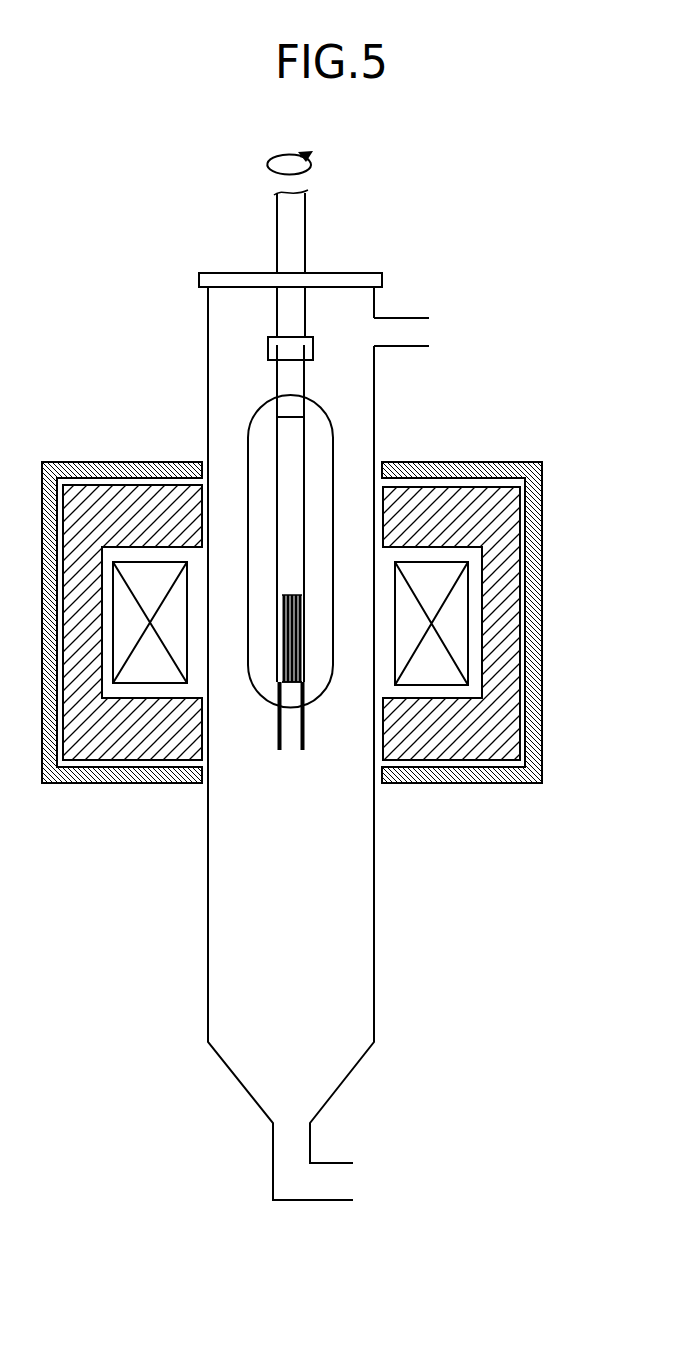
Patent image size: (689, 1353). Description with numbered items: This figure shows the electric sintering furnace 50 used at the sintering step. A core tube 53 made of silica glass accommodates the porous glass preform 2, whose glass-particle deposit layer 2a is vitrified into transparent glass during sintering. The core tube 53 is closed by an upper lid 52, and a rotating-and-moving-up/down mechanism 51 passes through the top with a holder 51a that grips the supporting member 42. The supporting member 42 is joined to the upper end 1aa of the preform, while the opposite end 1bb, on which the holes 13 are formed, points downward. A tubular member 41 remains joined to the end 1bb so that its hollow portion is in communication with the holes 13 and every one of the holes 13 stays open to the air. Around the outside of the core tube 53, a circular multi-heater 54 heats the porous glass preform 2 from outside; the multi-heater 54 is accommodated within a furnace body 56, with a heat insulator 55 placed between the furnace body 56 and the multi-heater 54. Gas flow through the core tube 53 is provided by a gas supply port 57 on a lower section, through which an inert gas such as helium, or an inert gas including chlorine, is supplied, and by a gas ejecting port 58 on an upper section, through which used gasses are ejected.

The sintering furnace 50 is at (526, 172).
The rotating-and-moving-up/down mechanism 51 is at (304, 223).
The upper lid 52 is at (355, 274).
The gas ejecting port 58 is at (429, 333).
The holder 51a is at (268, 345).
The supporting member 42 is at (305, 378).
The other end of the glass preform 1aa is at (291, 412).
The porous glass preform 2 is at (334, 448).
The glass-particle deposit layer 2a is at (260, 433).
The holes 13 is at (300, 655).
The tubular member 41 is at (304, 733).
The end of the glass preform 1bb is at (296, 684).
The core tube 53 is at (375, 888).
The gas supply port 57 is at (346, 1184).
The multi-heater 54 is at (460, 630).
The heat insulator 55 is at (503, 522).
The furnace body 56 is at (534, 727).